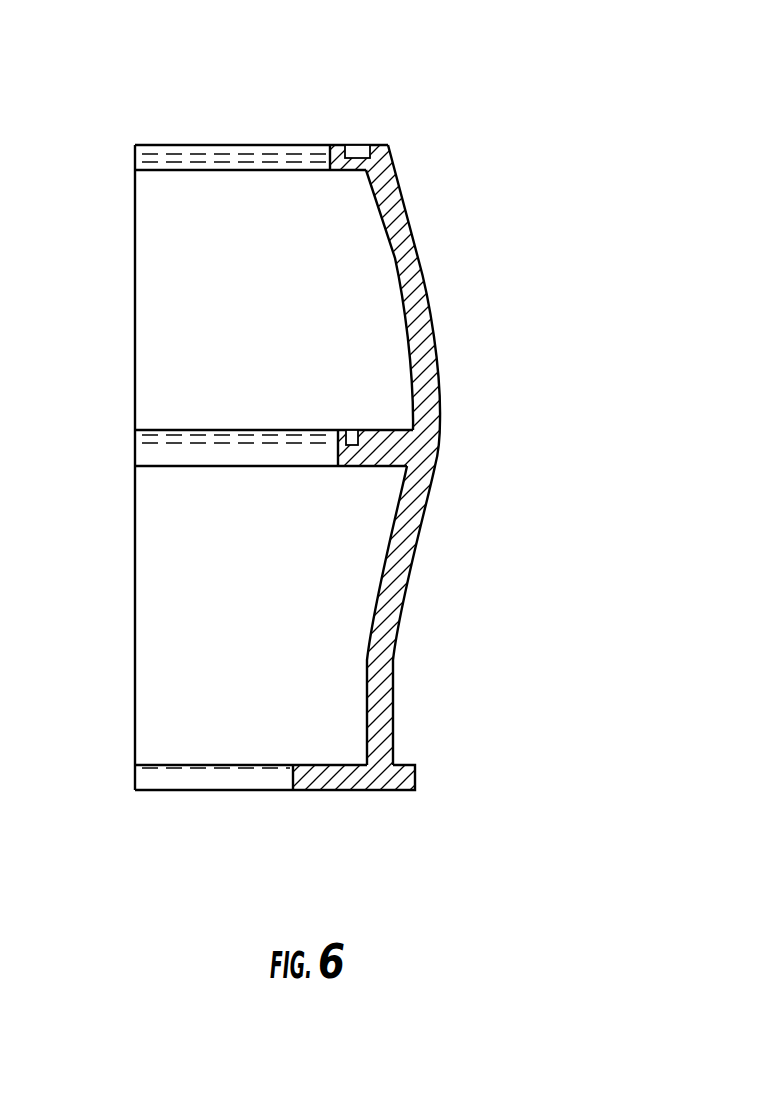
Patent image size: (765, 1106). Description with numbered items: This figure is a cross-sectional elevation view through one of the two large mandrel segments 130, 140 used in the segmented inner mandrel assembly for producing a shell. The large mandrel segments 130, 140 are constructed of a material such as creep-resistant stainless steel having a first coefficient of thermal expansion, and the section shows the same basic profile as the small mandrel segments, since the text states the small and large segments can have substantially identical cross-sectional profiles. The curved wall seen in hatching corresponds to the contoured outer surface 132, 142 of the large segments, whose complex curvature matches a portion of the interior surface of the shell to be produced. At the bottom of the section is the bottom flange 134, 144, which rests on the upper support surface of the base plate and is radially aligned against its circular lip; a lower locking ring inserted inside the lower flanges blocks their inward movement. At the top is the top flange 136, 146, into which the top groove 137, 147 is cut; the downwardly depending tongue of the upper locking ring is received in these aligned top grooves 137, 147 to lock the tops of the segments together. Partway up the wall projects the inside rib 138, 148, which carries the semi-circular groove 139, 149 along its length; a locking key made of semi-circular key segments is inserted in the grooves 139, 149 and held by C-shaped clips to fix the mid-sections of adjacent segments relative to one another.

The large mandrel segment 130 is at (340, 441).
The large mandrel segment 140 is at (340, 441).
The side wall 132 is at (441, 467).
The side wall 142 is at (433, 318).
The bottom flange 134 is at (303, 818).
The bottom flange 144 is at (327, 783).
The top flange 136 is at (260, 110).
The top flange 146 is at (336, 147).
The top groove 137 is at (408, 84).
The top groove 147 is at (357, 145).
The middle flange 138 is at (227, 479).
The middle flange 148 is at (360, 466).
The semi-circular groove 139 is at (199, 381).
The semi-circular groove 149 is at (352, 430).